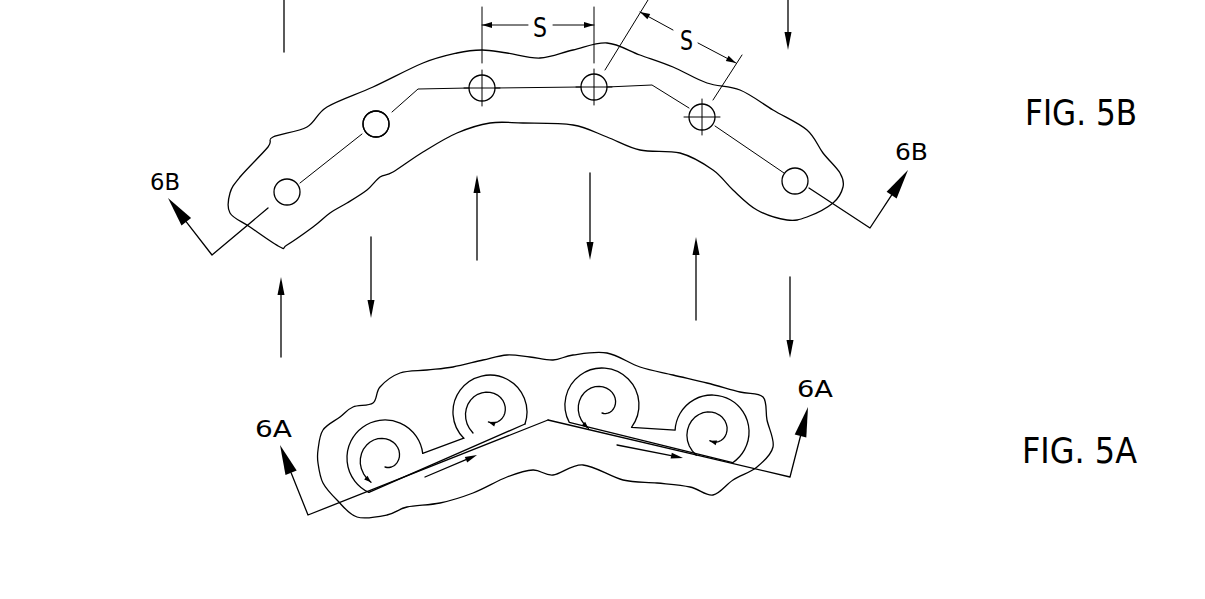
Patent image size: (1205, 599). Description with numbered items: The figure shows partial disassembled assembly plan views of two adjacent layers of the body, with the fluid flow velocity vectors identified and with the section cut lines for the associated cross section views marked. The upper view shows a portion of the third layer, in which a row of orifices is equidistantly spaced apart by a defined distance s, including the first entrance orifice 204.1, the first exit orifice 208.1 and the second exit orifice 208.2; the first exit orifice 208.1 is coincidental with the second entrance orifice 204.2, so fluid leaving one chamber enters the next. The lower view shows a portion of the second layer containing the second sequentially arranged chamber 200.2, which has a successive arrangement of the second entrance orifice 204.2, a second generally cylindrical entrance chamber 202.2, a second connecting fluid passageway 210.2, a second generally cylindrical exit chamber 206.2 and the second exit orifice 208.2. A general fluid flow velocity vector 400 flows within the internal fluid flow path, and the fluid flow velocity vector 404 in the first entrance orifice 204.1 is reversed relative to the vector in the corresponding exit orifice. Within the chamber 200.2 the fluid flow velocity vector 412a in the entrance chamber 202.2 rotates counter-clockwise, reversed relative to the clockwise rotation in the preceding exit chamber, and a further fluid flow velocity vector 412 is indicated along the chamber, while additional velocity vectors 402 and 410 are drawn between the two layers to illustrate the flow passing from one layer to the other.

In FIG. 5A, the second sequentially arranged chamber 200.2 is at (422, 436).
In FIG. 5A, the second generally cylindrical entrance chamber 202.2 is at (374, 409).
In FIG. 5A, the second generally cylindrical exit chamber 206.2 is at (522, 383).
In FIG. 5A, the second connecting fluid passageway 210.2 is at (477, 466).
In FIG. 5A, the insertion direction arrow 412 is at (450, 478).
In FIG. 5A, the fluid flow velocity vector 412a is at (363, 447).
In FIG. 5B, the first entrance orifice 204.1 is at (279, 182).
In FIG. 5B, the second entrance orifice 204.2 is at (377, 137).
In FIG. 5B, the first exit orifice 208.1 is at (376, 111).
In FIG. 5B, the second exit orifice 208.2 is at (492, 98).
In FIG. 5A, the general fluid flow velocity vector 400 is at (818, 304).
In FIG. 5A, the first movement direction 402 is at (280, 325).
In FIG. 5B, the fluid flow velocity vector 404 is at (283, 25).
In FIG. 5B, the second movement direction 410 is at (372, 250).